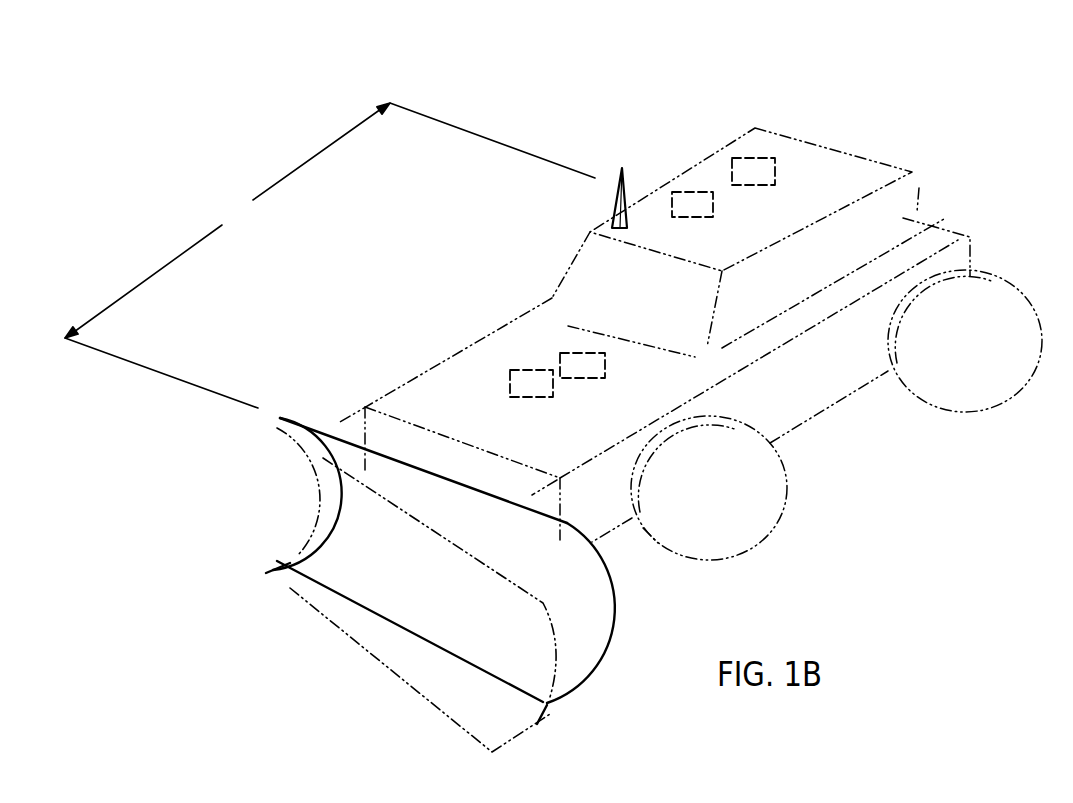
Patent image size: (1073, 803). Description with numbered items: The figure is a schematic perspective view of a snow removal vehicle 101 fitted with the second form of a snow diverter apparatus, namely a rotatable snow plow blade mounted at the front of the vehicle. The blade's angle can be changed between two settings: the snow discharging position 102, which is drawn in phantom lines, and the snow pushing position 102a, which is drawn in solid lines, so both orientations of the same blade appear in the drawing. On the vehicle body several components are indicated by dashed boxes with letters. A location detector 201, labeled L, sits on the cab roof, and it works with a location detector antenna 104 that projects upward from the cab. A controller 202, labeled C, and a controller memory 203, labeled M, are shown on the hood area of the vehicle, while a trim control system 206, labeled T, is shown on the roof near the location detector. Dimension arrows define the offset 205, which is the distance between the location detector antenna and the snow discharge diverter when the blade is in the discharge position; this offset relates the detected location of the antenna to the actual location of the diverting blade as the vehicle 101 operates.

The snow removal vehicle 101 is at (428, 445).
The snow discharging position 102 is at (308, 603).
The snow pushing position 102a is at (312, 582).
The location detector antenna 104 is at (618, 186).
The location detector 201 is at (740, 158).
The controller 202 is at (518, 368).
The controller memory 203 is at (570, 350).
The offset 205 is at (215, 197).
The trim control system 206 is at (676, 190).